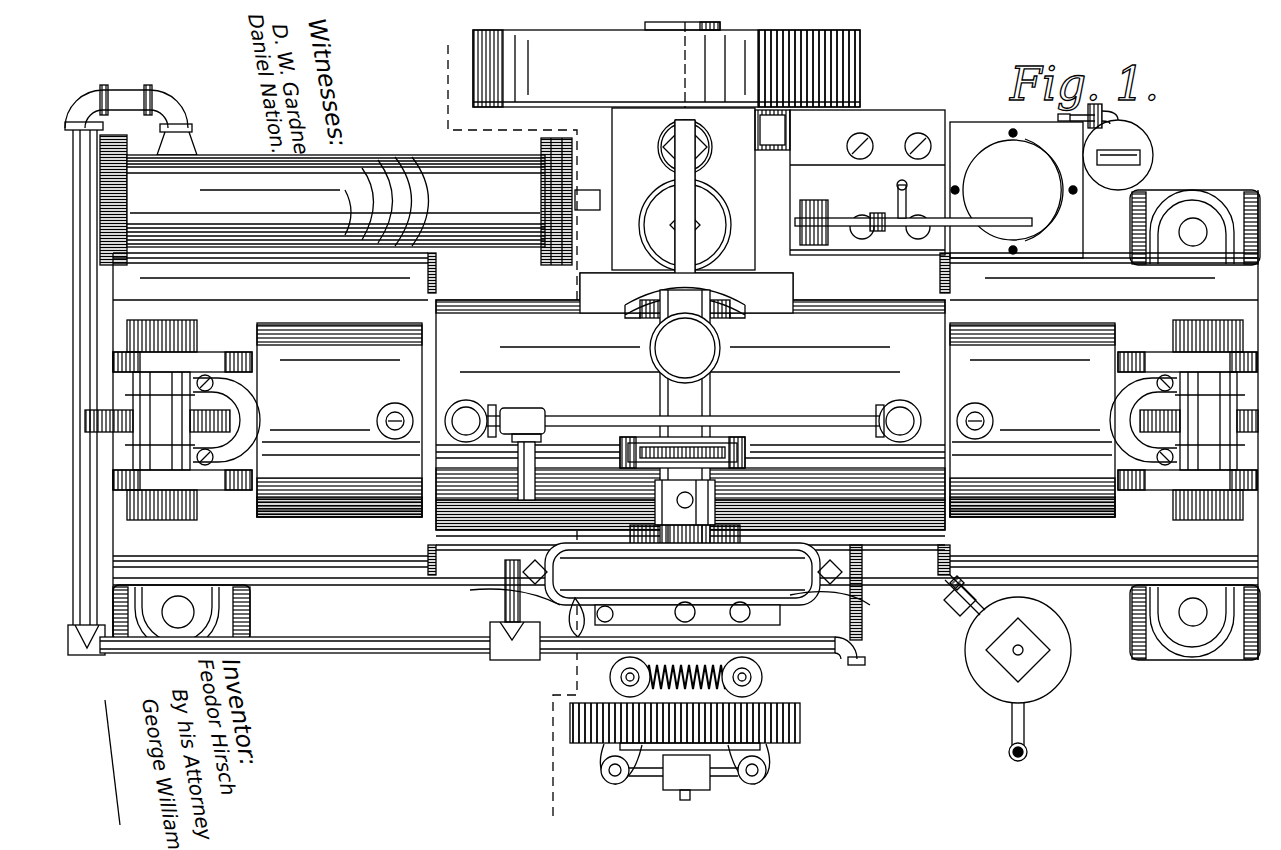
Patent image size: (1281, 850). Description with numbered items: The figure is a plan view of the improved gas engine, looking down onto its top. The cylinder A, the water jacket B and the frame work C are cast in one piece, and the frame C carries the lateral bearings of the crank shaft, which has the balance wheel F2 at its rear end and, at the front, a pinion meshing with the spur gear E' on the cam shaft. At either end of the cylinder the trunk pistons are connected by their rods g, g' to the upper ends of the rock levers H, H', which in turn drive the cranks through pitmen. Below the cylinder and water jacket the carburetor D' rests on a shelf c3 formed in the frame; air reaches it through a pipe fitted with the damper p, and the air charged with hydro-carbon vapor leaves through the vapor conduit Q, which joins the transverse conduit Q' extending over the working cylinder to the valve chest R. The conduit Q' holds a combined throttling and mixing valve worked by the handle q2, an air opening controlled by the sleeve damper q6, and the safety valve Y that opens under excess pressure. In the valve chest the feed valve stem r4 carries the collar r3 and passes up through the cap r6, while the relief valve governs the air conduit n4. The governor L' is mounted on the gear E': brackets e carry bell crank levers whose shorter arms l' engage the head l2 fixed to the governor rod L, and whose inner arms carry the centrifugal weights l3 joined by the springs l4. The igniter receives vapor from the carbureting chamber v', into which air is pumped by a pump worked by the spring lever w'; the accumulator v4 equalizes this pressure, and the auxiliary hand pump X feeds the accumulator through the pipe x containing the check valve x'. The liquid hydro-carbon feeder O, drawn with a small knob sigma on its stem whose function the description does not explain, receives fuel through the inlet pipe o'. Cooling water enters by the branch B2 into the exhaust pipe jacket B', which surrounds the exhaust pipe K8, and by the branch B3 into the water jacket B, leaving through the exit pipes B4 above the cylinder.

The water supply pipe branch B2 is at (60, 318).
The exhaust pipe K8 is at (105, 142).
The exhaust pipe jacket B' is at (364, 201).
The balance wheel F2 is at (666, 68).
The valve chest R is at (686, 210).
The pulley T' is at (697, 147).
The collar r3 is at (700, 218).
The valve stem r4 is at (670, 235).
The cap r6 is at (695, 236).
The air conduit n4 is at (772, 130).
The carbureting chamber v' is at (1016, 190).
The accumulator v4 is at (1014, 191).
The pipe x is at (1070, 114).
The check valve x' is at (1101, 108).
The auxiliary hand pump X is at (1118, 155).
The carburetor D' is at (689, 446).
The transverse conduit Q' is at (686, 408).
The frame work C is at (686, 425).
The rock lever H is at (168, 420).
The piston rod g is at (226, 420).
The cylinder A is at (686, 420).
The water jacket B is at (690, 425).
The safety valve Y is at (685, 348).
The exit pipes B4 is at (683, 442).
The handle q2 is at (620, 450).
The sleeve damper q6 is at (685, 520).
The vapor conduit Q is at (682, 574).
The water supply pipe branch B3 is at (492, 612).
The shelf or table c3 is at (470, 592).
The damper or regulator p is at (570, 612).
The spring lever w' is at (687, 613).
The springs l4 is at (687, 674).
The centrifugal weights l3 is at (684, 678).
The spur gear E' is at (704, 726).
The arms or brackets e is at (684, 764).
The head or socket piece l2 is at (683, 777).
The governor L' is at (638, 794).
The governor rod L is at (652, 820).
The shorter arms l' is at (728, 796).
The feeder O is at (1025, 671).
The knob sigma is at (1025, 755).
The inlet pipe o' is at (966, 585).
The piston rod g' is at (1143, 420).
The rock lever H' is at (1188, 420).